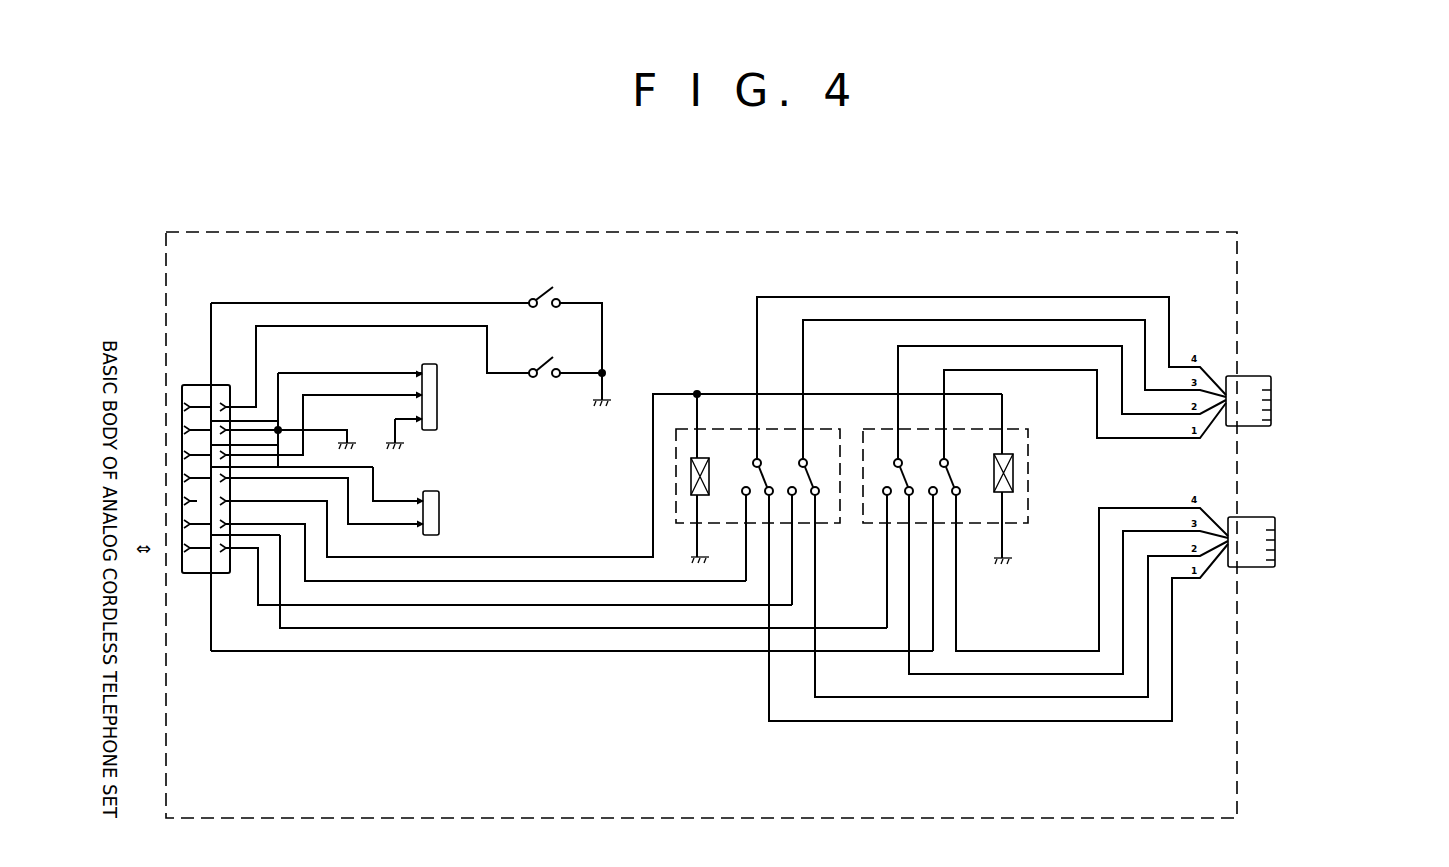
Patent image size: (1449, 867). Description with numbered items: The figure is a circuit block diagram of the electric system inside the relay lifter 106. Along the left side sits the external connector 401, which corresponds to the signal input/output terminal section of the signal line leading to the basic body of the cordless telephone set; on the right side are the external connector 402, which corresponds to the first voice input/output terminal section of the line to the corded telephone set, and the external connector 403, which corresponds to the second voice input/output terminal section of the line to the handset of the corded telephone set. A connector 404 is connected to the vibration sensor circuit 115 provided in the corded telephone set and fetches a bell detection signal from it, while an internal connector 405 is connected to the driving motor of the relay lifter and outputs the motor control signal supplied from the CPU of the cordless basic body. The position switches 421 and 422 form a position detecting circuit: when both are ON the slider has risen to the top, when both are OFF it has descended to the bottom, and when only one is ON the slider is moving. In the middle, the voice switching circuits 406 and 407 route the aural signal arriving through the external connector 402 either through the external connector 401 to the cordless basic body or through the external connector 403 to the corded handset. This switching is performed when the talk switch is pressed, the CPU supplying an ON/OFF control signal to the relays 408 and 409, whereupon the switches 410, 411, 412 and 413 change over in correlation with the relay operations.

The relay lifter 106 is at (717, 232).
The external connector 401 is at (203, 574).
The external connector 402 is at (1258, 376).
The external connector 403 is at (1258, 517).
The connector 404 is at (486, 397).
The internal connector 405 is at (431, 491).
The voice switching circuit 406 is at (775, 460).
The voice switching circuit 407 is at (969, 474).
The relay 408 is at (705, 457).
The relay 409 is at (1011, 454).
The switch 410 is at (765, 468).
The switch 411 is at (815, 468).
The switch 412 is at (908, 465).
The switch 413 is at (953, 465).
The position switch 421 is at (537, 299).
The position switch 422 is at (540, 369).
The vibration sensor circuit 115 is at (536, 433).